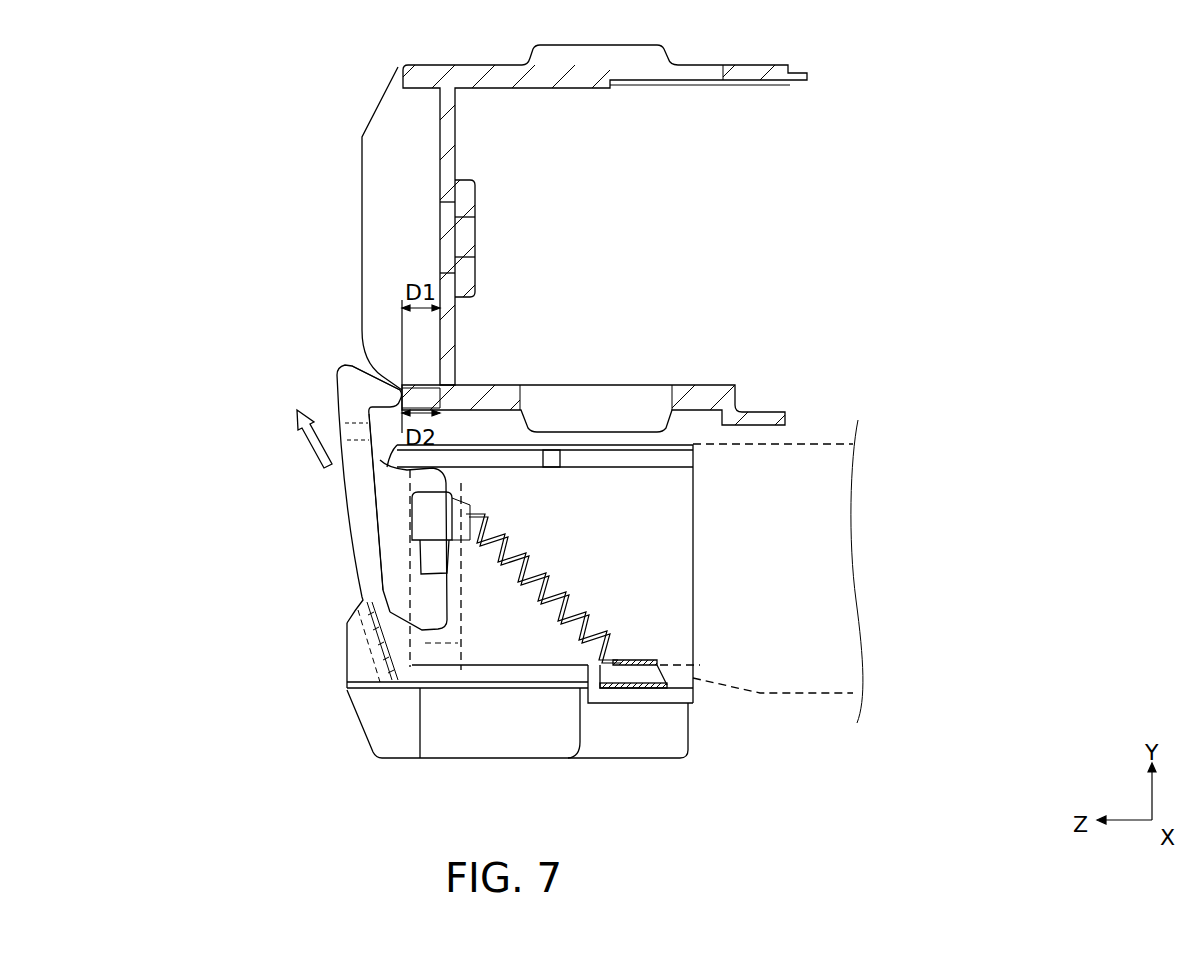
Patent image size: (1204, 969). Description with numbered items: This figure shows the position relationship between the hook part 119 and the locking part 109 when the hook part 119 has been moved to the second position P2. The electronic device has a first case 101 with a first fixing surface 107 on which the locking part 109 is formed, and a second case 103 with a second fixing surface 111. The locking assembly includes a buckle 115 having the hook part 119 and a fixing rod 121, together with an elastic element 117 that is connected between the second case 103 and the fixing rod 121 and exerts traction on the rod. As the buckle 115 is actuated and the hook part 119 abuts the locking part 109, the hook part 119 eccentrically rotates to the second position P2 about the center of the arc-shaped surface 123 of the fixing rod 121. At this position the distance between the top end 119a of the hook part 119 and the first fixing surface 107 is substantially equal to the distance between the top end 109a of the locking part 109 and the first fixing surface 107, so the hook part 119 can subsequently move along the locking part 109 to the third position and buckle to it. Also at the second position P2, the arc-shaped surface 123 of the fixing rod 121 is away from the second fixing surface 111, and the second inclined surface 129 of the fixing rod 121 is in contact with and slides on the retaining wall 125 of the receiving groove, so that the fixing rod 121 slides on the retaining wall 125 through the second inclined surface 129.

The first case 101 is at (492, 63).
The second case 103 is at (390, 727).
The first fixing surface 107 is at (440, 165).
The locking part 109 is at (418, 385).
The top end of the locking part 109a is at (282, 315).
The second fixing surface 111 is at (470, 497).
The buckle 115 is at (370, 500).
The elastic element 117 is at (612, 618).
The hook part 119 is at (348, 387).
The top end of the hook part 119a is at (312, 347).
The fixing rod 121 is at (412, 565).
The arc-shaped surface 123 is at (475, 528).
The retaining wall 125 is at (353, 603).
The second inclined surface 129 is at (412, 492).
The second position P2 is at (345, 363).